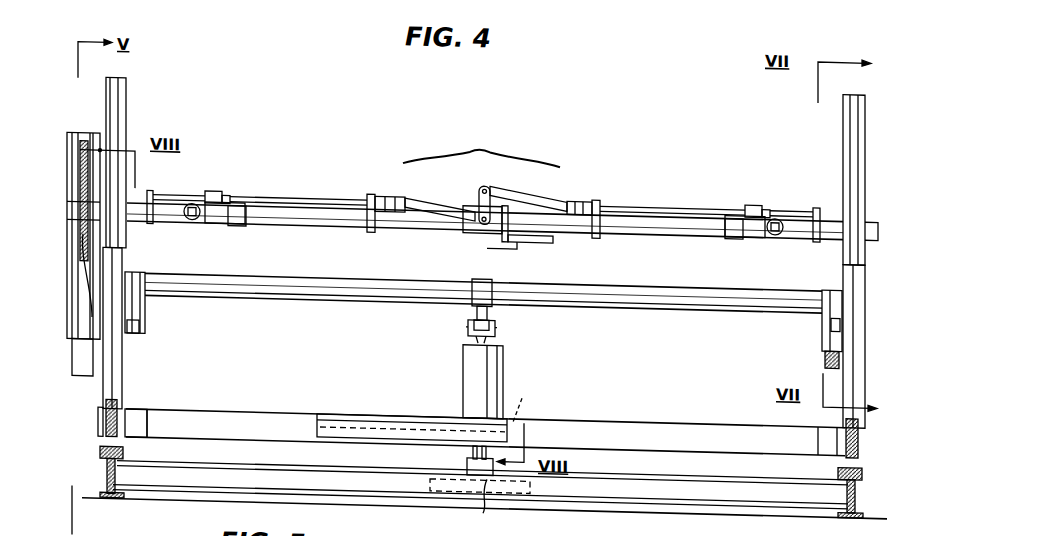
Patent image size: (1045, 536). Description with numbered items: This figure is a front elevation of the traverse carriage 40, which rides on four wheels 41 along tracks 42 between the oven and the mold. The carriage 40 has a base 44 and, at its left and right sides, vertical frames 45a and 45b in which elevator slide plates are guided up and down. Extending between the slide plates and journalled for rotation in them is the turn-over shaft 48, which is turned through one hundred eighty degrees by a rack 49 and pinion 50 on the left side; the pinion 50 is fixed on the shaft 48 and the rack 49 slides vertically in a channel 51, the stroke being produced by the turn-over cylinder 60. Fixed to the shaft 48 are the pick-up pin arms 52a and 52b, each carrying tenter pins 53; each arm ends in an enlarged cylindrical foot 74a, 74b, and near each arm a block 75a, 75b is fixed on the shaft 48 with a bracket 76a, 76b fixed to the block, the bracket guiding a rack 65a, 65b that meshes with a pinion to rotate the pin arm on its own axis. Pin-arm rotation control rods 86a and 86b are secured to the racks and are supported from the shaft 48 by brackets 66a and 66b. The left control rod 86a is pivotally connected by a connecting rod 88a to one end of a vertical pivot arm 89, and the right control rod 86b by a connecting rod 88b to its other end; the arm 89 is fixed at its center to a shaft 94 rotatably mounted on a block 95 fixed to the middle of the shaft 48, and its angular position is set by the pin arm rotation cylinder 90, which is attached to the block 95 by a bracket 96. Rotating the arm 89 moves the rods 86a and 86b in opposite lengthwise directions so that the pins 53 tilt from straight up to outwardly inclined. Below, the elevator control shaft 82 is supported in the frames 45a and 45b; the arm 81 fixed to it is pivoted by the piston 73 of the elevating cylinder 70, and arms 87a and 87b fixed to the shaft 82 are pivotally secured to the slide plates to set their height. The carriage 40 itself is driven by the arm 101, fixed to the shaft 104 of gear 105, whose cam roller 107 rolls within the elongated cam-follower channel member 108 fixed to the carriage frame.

The traverse carriage 40 is at (481, 140).
The wheels 41 is at (114, 400).
The tracks 42 is at (123, 457).
The base 44 is at (715, 410).
The left vertical frame 45a is at (117, 263).
The right vertical frame 45b is at (847, 260).
The turn-over shaft 48 is at (338, 222).
The rack 49 is at (88, 176).
The pinion 50 is at (92, 318).
The channel 51 is at (77, 133).
The left pick-up pin arm 52a is at (198, 216).
The right pick-up pin arm 52b is at (775, 219).
The tenter pins 53 is at (788, 200).
The turn-over cylinder 60 is at (84, 378).
The rack 65a is at (230, 194).
The rack 65b is at (747, 194).
The brackets 66a is at (371, 188).
The brackets 66b is at (598, 190).
The elevating cylinder 70 is at (468, 362).
The piston 73 is at (470, 333).
The cylindrical foot 74a is at (187, 218).
The cylindrical foot 74b is at (785, 218).
The block 75a is at (235, 224).
The block 75b is at (735, 221).
The bracket 76a is at (213, 190).
The bracket 76b is at (762, 188).
The arm 81 is at (480, 270).
The elevator control shaft 82 is at (379, 292).
The pin-arm rotation control rods 86a is at (305, 194).
The pin-arm rotation control rod 86b is at (670, 194).
The arm 87a is at (145, 316).
The arm 87b is at (823, 314).
The connecting rod 88a is at (430, 198).
The connecting rod 88b is at (529, 190).
The vertical pivot arm 89 is at (483, 182).
The pin arm rotation cylinder 90 is at (537, 232).
The shaft 94 is at (454, 208).
The block 95 is at (481, 226).
The bracket 96 is at (523, 240).
The arm 101 is at (467, 455).
The shaft 104 is at (490, 507).
The gear 105 is at (430, 473).
The cam roller 107 is at (537, 403).
The cam-follower channel member 108 is at (347, 425).